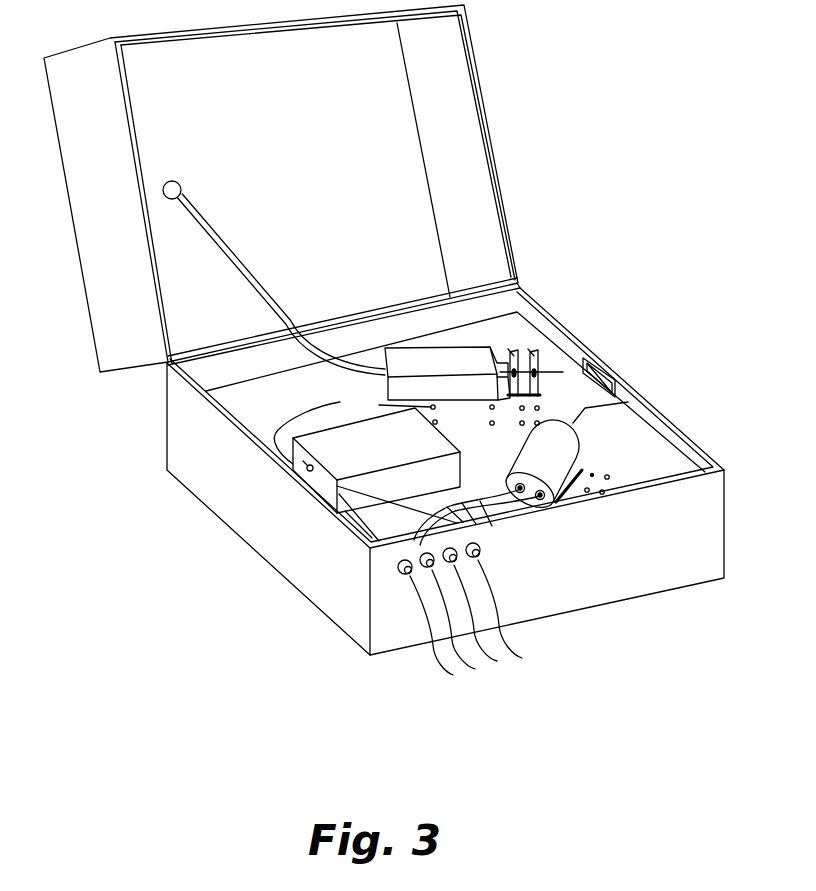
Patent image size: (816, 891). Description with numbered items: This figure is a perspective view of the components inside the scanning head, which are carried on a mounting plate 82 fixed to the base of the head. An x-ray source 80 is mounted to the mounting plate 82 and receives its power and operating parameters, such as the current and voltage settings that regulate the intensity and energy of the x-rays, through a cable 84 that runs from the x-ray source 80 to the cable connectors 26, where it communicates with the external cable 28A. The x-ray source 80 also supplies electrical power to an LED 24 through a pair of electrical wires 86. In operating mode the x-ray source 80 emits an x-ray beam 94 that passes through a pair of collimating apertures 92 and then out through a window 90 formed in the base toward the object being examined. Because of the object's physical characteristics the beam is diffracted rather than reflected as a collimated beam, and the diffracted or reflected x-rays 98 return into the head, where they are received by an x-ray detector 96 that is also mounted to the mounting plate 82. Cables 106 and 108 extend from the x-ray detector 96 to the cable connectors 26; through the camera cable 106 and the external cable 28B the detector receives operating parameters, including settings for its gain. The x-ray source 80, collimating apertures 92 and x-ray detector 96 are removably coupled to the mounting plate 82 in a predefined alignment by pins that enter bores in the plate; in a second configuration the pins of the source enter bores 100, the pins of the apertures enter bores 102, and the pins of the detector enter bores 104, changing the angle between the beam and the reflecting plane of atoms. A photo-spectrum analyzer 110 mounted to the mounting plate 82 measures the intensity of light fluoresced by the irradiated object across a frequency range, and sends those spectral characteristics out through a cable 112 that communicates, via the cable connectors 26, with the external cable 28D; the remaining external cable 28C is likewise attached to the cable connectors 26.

The LED 24 is at (170, 181).
The cable connectors 26 is at (400, 571).
The cable 28A is at (438, 660).
The cable 28B is at (465, 662).
The cable 28C is at (493, 660).
The cable 28D is at (522, 652).
The x-ray source 80 is at (452, 375).
The mounting plate 82 is at (273, 413).
The cable 84 is at (263, 442).
The pair of electrical wires 86 is at (225, 258).
The window 90 is at (605, 366).
The collimating apertures 92 is at (520, 350).
The x-ray beam 94 is at (566, 371).
The x-ray detector 96 is at (572, 465).
The reflected x-rays 98 is at (628, 402).
The bores 100 is at (352, 428).
The bores 102 is at (520, 425).
The bores 104 is at (593, 475).
The cable 106 is at (485, 529).
The cable 108 is at (481, 522).
The photo-spectrum analyzer 110 is at (388, 460).
The cable 112 is at (387, 498).